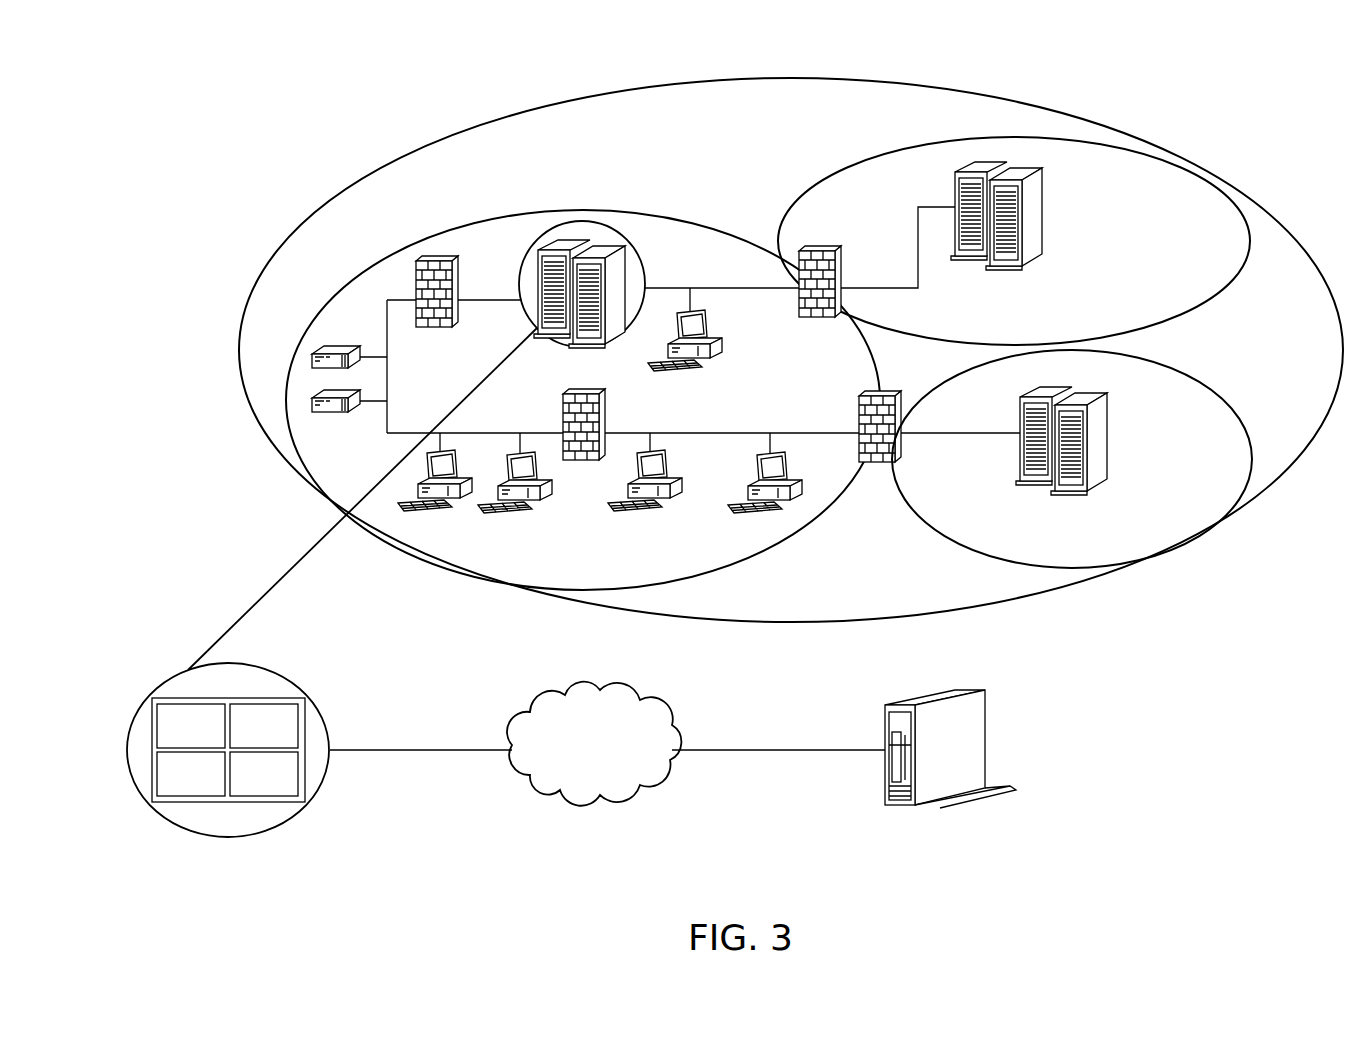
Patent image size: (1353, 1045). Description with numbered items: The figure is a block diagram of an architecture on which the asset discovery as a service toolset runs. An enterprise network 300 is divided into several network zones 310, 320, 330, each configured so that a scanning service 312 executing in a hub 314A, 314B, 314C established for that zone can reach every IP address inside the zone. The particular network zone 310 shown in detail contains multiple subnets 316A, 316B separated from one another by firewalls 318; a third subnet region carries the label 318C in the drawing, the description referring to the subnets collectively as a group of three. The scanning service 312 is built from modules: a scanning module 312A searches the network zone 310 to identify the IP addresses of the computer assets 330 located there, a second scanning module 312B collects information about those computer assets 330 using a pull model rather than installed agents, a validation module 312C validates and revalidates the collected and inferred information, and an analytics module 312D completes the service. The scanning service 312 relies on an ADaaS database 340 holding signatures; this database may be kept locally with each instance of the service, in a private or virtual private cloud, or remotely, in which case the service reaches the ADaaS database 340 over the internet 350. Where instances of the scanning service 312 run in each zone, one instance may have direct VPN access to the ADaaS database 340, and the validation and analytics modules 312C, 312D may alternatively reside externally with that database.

The enterprise network 300 is at (232, 80).
The network zone 310 is at (393, 250).
The scanning service 312 is at (347, 499).
The scanning module 312A is at (222, 737).
The scanning module 312B is at (295, 737).
The validation module 312C is at (222, 785).
The analytics module 312D is at (295, 785).
The hub 314A is at (598, 242).
The hub 314B is at (1040, 218).
The hub 314C is at (1106, 445).
The subnet 316A is at (456, 382).
The subnet 316B is at (767, 320).
The firewall 318 is at (437, 257).
The subnetwork 318C is at (742, 461).
The network zone 320 is at (1230, 283).
The computer assets 330 is at (312, 401).
The ADaaS database 340 is at (988, 746).
The internet 350 is at (600, 796).